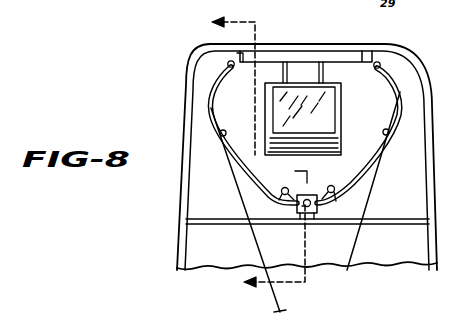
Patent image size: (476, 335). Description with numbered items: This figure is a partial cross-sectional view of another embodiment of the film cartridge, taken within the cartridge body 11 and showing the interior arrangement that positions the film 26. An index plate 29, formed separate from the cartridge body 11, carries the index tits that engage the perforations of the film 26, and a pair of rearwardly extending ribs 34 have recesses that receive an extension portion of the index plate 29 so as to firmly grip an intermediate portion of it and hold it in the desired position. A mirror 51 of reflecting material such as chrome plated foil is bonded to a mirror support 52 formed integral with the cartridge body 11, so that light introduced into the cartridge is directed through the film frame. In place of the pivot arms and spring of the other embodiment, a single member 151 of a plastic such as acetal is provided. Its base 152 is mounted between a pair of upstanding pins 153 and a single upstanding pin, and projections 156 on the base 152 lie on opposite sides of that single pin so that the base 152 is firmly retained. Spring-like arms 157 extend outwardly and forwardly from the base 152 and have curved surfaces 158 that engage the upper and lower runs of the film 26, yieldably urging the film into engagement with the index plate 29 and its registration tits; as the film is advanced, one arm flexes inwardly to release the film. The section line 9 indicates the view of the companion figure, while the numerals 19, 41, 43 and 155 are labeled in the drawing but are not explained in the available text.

The section line 9- 9 is at (257, 153).
The cartridge body 11 is at (433, 151).
The mounting rail 19 is at (359, 46).
The film 26 is at (253, 244).
The index plate 29 is at (276, 55).
The rearwardly extending ribs 34 is at (319, 78).
The member 41 is at (444, 8).
The member 43 is at (464, 17).
The mirror 51 is at (324, 115).
The mirror support 52 is at (343, 132).
The single member 151 is at (349, 200).
The base 152 is at (289, 199).
The upstanding pins 153 is at (332, 195).
The pivot roller 155 is at (281, 187).
The projections 156 is at (292, 216).
The spring-like arms 157 is at (251, 182).
The curved surfaces 158 is at (208, 93).